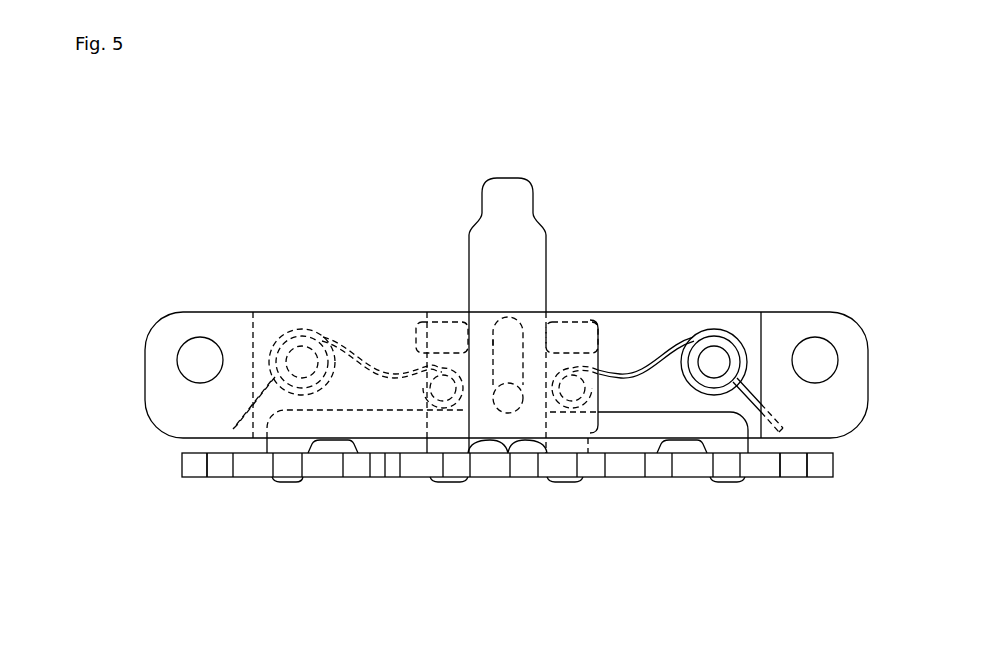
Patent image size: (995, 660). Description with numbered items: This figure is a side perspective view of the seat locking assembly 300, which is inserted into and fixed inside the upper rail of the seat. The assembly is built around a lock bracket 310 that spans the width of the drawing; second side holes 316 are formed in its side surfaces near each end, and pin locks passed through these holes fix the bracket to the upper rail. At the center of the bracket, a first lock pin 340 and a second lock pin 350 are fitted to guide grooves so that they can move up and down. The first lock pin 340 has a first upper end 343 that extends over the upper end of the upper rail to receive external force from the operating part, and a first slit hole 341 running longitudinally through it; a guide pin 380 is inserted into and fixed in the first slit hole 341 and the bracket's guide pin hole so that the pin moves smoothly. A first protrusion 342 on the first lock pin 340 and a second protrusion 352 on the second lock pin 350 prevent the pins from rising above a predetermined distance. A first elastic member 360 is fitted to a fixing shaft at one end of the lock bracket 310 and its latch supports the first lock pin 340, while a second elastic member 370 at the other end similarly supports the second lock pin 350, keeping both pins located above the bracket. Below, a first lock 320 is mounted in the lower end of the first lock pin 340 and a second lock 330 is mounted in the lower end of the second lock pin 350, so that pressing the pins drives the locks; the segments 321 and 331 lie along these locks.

The seat locking assembly 300 is at (303, 153).
The lock bracket 310 is at (232, 308).
The second side holes 316 is at (198, 347).
The first lock 320 is at (195, 479).
The base plate segment 321 is at (220, 467).
The second lock 330 is at (820, 479).
The base plate segment 331 is at (795, 470).
The first lock pin 340 is at (284, 458).
The first slit hole 341 is at (510, 325).
The first protrusion 342 is at (428, 317).
The first upper end 343 is at (532, 203).
The second lock pin 350 is at (729, 441).
The second protrusion 352 is at (575, 332).
The first elastic member 360 is at (307, 326).
The second elastic member 370 is at (720, 328).
The guide pin 380 is at (507, 400).